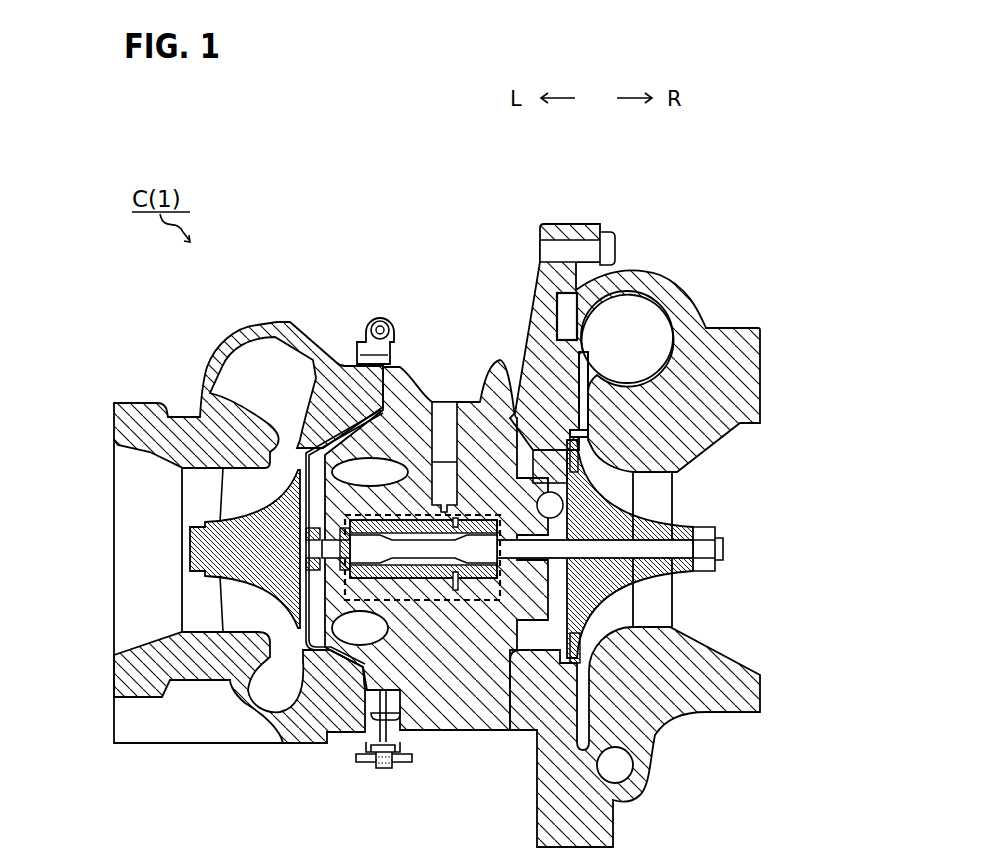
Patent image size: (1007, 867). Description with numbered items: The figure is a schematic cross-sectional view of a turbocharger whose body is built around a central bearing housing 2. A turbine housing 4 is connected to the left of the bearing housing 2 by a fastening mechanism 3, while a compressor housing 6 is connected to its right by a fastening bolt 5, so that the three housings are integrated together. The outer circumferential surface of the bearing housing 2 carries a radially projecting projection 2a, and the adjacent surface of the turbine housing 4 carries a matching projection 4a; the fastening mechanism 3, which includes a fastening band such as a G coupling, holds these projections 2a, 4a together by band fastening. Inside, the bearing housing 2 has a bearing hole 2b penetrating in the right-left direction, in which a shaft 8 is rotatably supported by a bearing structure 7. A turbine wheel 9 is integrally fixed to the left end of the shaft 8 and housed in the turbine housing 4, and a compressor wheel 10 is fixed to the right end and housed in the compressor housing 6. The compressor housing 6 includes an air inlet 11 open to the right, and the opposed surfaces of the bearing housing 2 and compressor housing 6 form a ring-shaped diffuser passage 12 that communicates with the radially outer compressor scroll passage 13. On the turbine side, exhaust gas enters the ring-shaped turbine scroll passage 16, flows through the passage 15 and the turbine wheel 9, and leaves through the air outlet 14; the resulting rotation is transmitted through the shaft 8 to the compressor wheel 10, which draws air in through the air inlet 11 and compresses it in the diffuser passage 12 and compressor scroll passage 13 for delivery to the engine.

The bearing housing 2 is at (492, 382).
The projection 2a is at (403, 769).
The bearing hole 2b is at (468, 600).
The fastening mechanism 3 is at (386, 316).
The turbine housing 4 is at (318, 345).
The projection 4a is at (440, 770).
The fastening bolt 5 is at (607, 228).
The compressor housing 6 is at (730, 328).
The bearing structure 7 is at (418, 503).
The shaft 8 is at (443, 577).
The turbine wheel 9 is at (253, 585).
The compressor wheel 10 is at (667, 522).
The air inlet 11 is at (747, 428).
The diffuser passage 12 is at (607, 360).
The compressor scroll passage 13 is at (648, 307).
The air outlet 14 is at (127, 448).
The passage 15 is at (210, 397).
The turbine scroll passage 16 is at (253, 357).